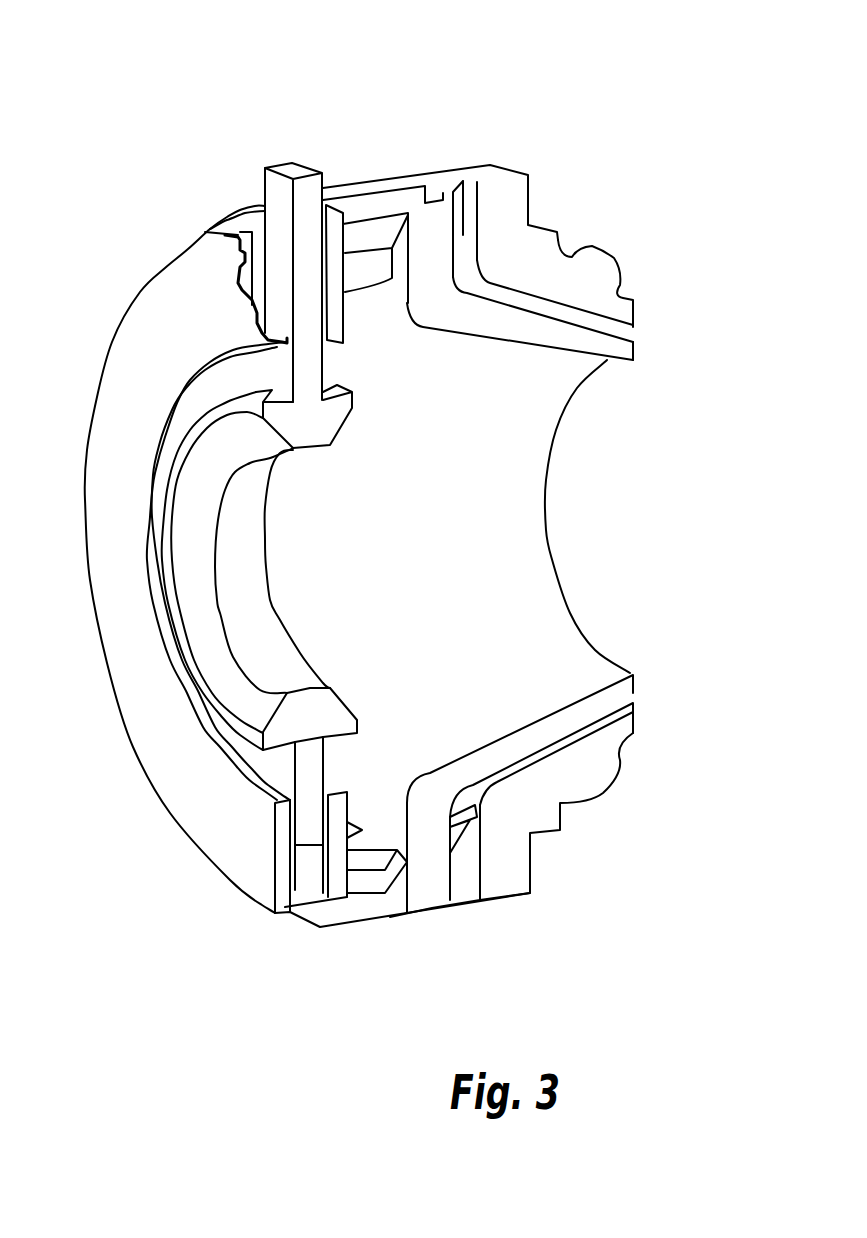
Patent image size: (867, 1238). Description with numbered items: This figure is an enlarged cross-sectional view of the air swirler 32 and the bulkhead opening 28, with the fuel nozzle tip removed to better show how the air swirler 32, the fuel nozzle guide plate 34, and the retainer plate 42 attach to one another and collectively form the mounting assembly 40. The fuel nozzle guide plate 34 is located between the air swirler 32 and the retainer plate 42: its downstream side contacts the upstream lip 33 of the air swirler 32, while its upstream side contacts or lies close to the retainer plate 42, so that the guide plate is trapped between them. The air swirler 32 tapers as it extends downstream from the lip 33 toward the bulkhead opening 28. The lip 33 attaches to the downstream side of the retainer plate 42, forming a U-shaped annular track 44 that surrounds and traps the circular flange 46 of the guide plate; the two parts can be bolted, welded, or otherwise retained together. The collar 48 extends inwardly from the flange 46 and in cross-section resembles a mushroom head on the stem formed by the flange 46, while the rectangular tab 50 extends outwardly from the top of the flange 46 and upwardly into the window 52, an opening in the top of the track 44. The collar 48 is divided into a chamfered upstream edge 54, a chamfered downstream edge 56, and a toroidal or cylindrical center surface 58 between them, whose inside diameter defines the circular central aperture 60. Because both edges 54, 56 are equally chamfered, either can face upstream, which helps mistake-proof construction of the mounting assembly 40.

The bulkhead opening 28 is at (610, 537).
The air swirler 32 is at (428, 240).
The upstream lip 33 is at (336, 322).
The fuel nozzle guide plate 34 is at (193, 405).
The mounting assembly 40 is at (630, 177).
The retainer plate 42 is at (227, 847).
The track 44 is at (317, 860).
The flange 46 is at (280, 768).
The collar 48 is at (307, 712).
The tab 50 is at (282, 193).
The window 52 is at (262, 238).
The upstream edge 54 is at (227, 669).
The downstream edge 56 is at (350, 708).
The center surface 58 is at (247, 603).
The central aperture 60 is at (313, 565).